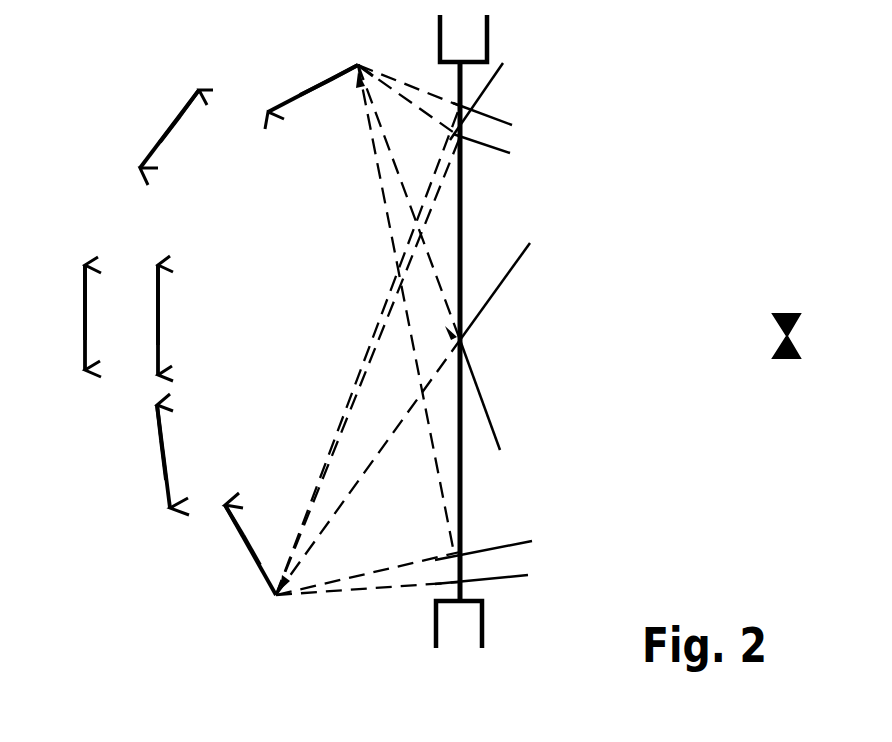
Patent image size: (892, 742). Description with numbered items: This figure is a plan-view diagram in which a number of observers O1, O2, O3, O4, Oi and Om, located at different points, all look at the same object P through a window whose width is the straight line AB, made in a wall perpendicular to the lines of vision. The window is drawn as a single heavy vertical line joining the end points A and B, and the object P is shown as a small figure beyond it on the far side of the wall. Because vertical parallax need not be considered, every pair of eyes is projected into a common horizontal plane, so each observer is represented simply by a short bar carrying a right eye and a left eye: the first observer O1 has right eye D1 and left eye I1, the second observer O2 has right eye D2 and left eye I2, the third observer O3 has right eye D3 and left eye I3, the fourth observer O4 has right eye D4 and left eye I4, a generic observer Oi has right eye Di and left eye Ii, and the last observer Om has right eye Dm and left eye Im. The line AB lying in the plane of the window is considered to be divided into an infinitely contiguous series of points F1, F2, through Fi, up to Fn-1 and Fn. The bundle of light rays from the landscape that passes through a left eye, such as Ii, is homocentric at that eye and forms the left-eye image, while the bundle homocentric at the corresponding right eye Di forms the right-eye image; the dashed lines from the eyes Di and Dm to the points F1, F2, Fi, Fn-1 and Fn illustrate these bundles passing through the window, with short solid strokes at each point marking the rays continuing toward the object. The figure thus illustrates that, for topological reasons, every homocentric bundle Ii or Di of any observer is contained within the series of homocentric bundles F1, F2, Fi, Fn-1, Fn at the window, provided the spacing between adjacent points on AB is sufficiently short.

The window end point A is at (463, 38).
The window end point B is at (459, 624).
The object P is at (797, 336).
The first point of window line F1 is at (467, 101).
The second point of window line F2 is at (465, 140).
The i-th point of window line Fi is at (475, 346).
The (n-1)-th point of window line Fn-1 is at (465, 550).
The n-th point of window line Fn is at (462, 599).
The right eye of first observer D1 is at (163, 460).
The first observer O1 is at (147, 460).
The left eye of first observer I1 is at (144, 422).
The right eye of second observer D2 is at (147, 321).
The second observer O2 is at (140, 322).
The left eye of second observer I2 is at (144, 283).
The right eye of third observer D3 is at (74, 319).
The third observer O3 is at (66, 320).
The left eye of third observer I3 is at (71, 282).
The right eye of fourth observer D4 is at (154, 129).
The fourth observer O4 is at (170, 129).
The left eye of fourth observer I4 is at (189, 103).
The right eye of i-th observer Di is at (356, 299).
The i-th observer Oi is at (315, 87).
The left eye of i-th observer Ii is at (344, 72).
The right eye of m-th observer Dm is at (342, 364).
The m-th observer Om is at (238, 560).
The left eye of m-th observer Im is at (223, 527).